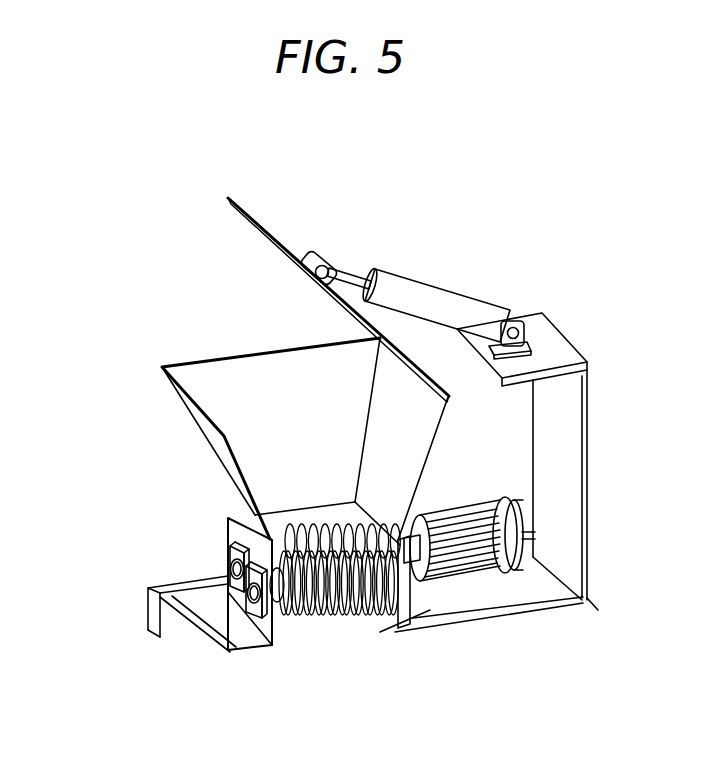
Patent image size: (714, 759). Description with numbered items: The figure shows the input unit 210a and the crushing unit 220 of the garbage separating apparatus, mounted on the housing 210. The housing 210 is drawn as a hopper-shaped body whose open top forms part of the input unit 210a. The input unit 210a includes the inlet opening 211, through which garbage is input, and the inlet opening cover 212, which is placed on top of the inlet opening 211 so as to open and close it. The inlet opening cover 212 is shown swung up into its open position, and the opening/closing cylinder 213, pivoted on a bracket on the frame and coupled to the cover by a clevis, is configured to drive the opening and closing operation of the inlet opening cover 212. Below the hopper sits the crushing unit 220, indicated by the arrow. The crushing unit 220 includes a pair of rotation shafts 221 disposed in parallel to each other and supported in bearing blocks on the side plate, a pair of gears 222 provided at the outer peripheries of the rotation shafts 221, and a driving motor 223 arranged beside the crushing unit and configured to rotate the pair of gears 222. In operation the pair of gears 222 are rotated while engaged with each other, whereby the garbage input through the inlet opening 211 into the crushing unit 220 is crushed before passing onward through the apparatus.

The housing 210 is at (197, 420).
The input unit 210a is at (478, 162).
The inlet opening 211 is at (316, 352).
The inlet opening cover 212 is at (258, 222).
The opening/closing cylinder 213 is at (433, 298).
The crushing unit 220 is at (198, 553).
The rotation shafts 221 is at (231, 592).
The gears 222 is at (311, 620).
The driving motor 223 is at (470, 583).